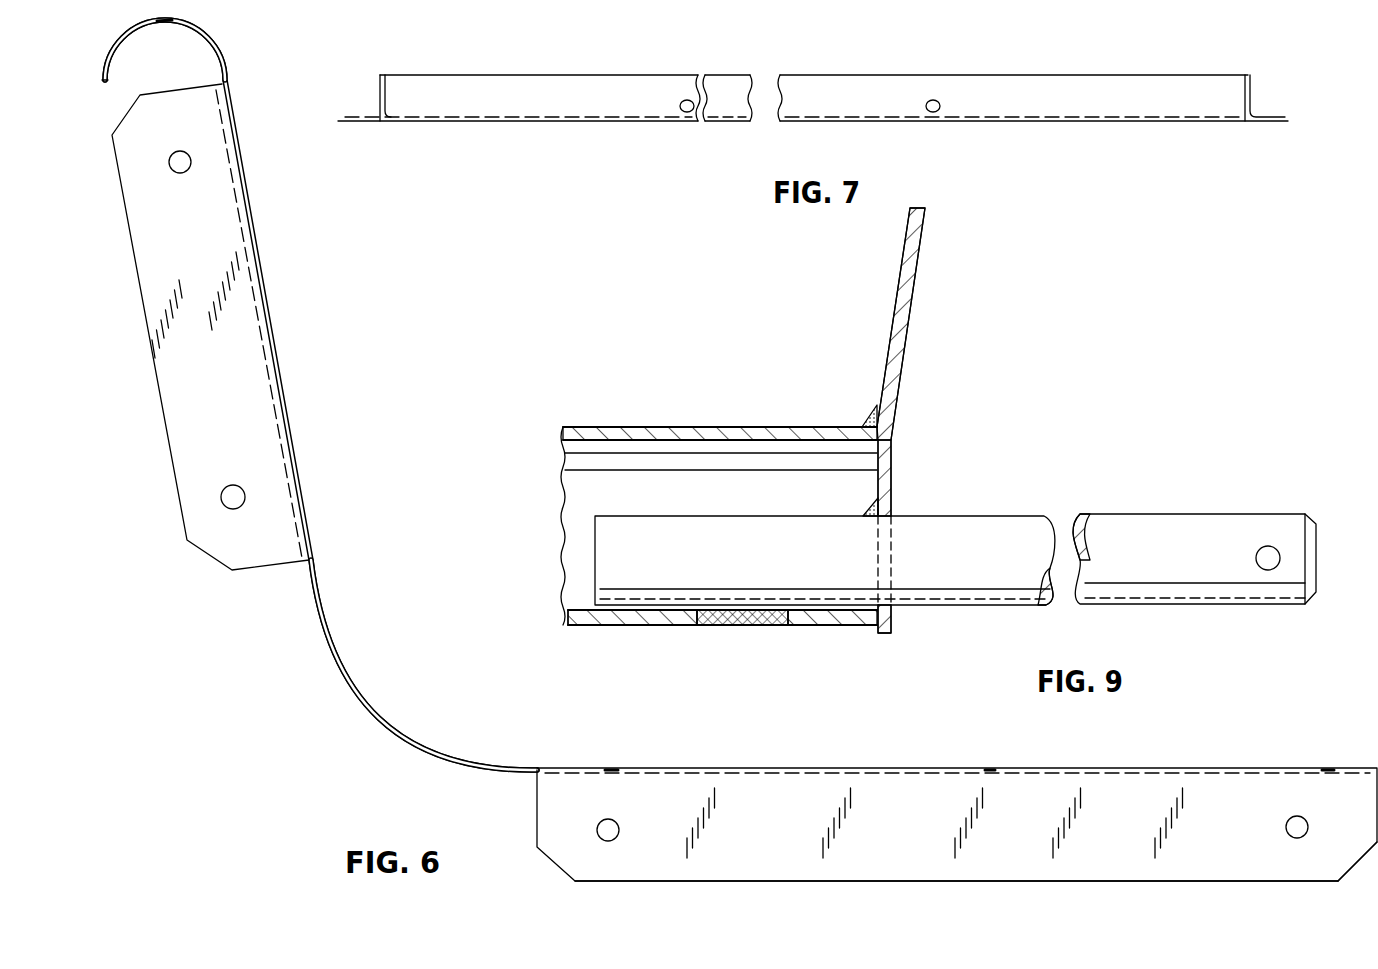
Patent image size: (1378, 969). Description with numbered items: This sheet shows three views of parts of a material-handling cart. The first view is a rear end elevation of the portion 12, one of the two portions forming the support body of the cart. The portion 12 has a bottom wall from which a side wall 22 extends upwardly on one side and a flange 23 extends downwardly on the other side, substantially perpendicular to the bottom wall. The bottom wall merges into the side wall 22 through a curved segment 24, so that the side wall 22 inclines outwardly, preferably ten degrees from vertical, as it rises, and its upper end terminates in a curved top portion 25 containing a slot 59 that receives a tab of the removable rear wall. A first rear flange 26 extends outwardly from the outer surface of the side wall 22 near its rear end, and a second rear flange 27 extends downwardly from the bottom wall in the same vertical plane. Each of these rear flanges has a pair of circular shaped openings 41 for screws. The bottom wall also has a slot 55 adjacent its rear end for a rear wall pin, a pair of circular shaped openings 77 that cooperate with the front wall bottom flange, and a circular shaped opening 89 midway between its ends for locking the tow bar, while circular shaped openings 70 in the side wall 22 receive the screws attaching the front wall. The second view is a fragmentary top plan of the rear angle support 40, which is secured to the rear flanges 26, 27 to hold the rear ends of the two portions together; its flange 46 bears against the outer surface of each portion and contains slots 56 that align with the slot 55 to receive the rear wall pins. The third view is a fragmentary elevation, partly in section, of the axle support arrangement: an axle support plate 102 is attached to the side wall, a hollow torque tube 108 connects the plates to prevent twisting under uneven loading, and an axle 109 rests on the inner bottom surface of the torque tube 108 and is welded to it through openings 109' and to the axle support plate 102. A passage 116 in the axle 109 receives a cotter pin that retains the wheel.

In FIG. 6, the portion 12 is at (886, 766).
In FIG. 6, the side wall 22 is at (272, 340).
In FIG. 6, the flange 23 is at (1343, 880).
In FIG. 6, the curved segment 24 is at (372, 708).
In FIG. 6, the curved top portion 25 is at (120, 48).
In FIG. 6, the first rear flange 26 is at (150, 353).
In FIG. 6, the second rear flange 27 is at (1040, 882).
In FIG. 6, the circular shaped openings 41 is at (184, 173).
In FIG. 6, the slot 55 is at (990, 770).
In FIG. 6, the slot 59 is at (168, 24).
In FIG. 6, the circular shaped openings 70 is at (238, 145).
In FIG. 6, the circular shaped openings 77 is at (612, 770).
In FIG. 6, the circular shaped opening 89 is at (1330, 768).
In FIG. 7, the rear angle support 40 is at (373, 103).
In FIG. 7, the flange 46 is at (568, 88).
In FIG. 7, the slots 56 is at (686, 104).
In FIG. 9, the axle support plate 102 is at (905, 333).
In FIG. 9, the torque tube 108 is at (762, 425).
In FIG. 9, the axle 109 is at (825, 586).
In FIG. 9, the openings 109' is at (734, 638).
In FIG. 9, the passage 116 is at (1266, 548).